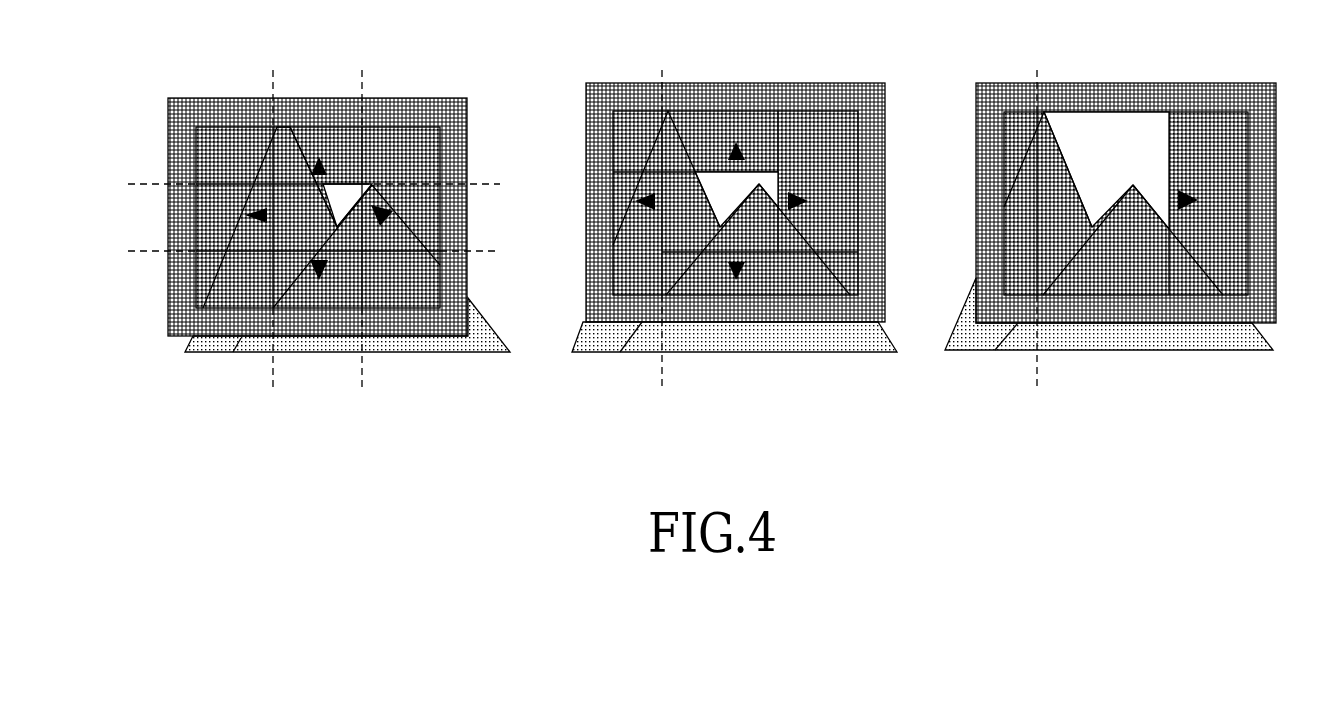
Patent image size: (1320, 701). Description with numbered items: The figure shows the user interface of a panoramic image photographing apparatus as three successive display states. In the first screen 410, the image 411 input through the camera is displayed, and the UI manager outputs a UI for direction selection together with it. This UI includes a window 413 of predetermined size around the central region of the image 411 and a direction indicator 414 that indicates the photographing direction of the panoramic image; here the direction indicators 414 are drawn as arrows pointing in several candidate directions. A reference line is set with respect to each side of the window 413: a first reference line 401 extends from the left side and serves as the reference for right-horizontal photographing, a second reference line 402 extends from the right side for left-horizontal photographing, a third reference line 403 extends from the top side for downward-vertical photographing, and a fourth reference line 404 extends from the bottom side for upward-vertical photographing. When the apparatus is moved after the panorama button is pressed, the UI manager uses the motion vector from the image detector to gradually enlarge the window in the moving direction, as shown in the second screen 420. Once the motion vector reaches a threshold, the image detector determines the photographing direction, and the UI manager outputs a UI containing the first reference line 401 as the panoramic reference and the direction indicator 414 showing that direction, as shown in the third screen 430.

The first screen 410 is at (310, 82).
The image 411 is at (290, 237).
The window 413 is at (346, 184).
The direction indicator 414 is at (389, 226).
The first reference line 401 is at (277, 367).
The second reference line 402 is at (365, 367).
The third reference line 403 is at (143, 185).
The fourth reference line 404 is at (143, 251).
The second screen 420 is at (722, 68).
The third screen 430 is at (1107, 68).